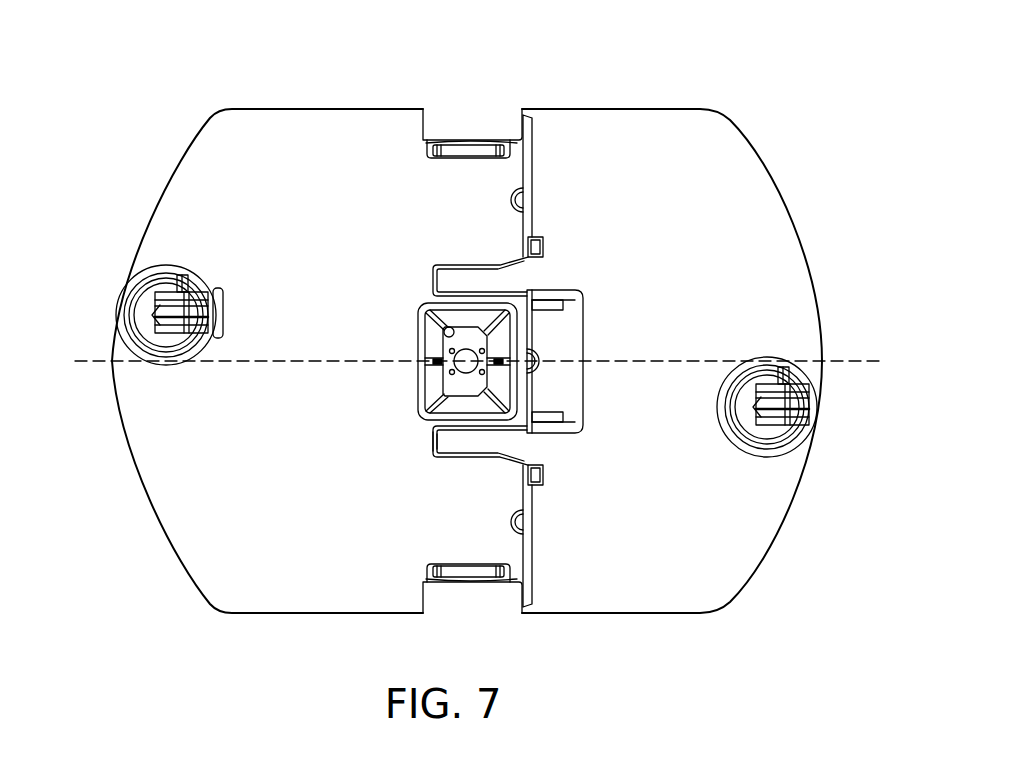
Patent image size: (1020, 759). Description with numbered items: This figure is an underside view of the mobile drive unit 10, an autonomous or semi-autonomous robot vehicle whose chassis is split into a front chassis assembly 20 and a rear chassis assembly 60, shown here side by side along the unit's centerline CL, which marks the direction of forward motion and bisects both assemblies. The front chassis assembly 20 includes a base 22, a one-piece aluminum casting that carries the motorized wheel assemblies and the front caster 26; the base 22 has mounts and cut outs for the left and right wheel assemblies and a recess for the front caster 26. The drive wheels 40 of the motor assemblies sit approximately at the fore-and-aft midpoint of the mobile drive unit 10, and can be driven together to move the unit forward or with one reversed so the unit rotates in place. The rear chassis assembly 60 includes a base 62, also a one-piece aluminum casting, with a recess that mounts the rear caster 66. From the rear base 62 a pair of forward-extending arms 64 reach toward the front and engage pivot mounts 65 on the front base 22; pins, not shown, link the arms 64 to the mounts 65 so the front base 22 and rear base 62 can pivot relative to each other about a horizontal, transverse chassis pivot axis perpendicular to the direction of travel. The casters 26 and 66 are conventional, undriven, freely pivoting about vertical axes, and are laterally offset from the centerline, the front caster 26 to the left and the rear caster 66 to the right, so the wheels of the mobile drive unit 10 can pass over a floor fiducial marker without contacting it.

The mobile drive unit 10 is at (65, 92).
The front chassis assembly 20 is at (208, 80).
The base 22 is at (236, 600).
The front caster 26 is at (198, 292).
The drive wheel 40 is at (460, 122).
The rear chassis assembly 60 is at (822, 80).
The base 62 is at (655, 614).
The forward-extending arms 64 is at (460, 276).
The pivot mounts 65 is at (437, 437).
The rear caster 66 is at (768, 428).